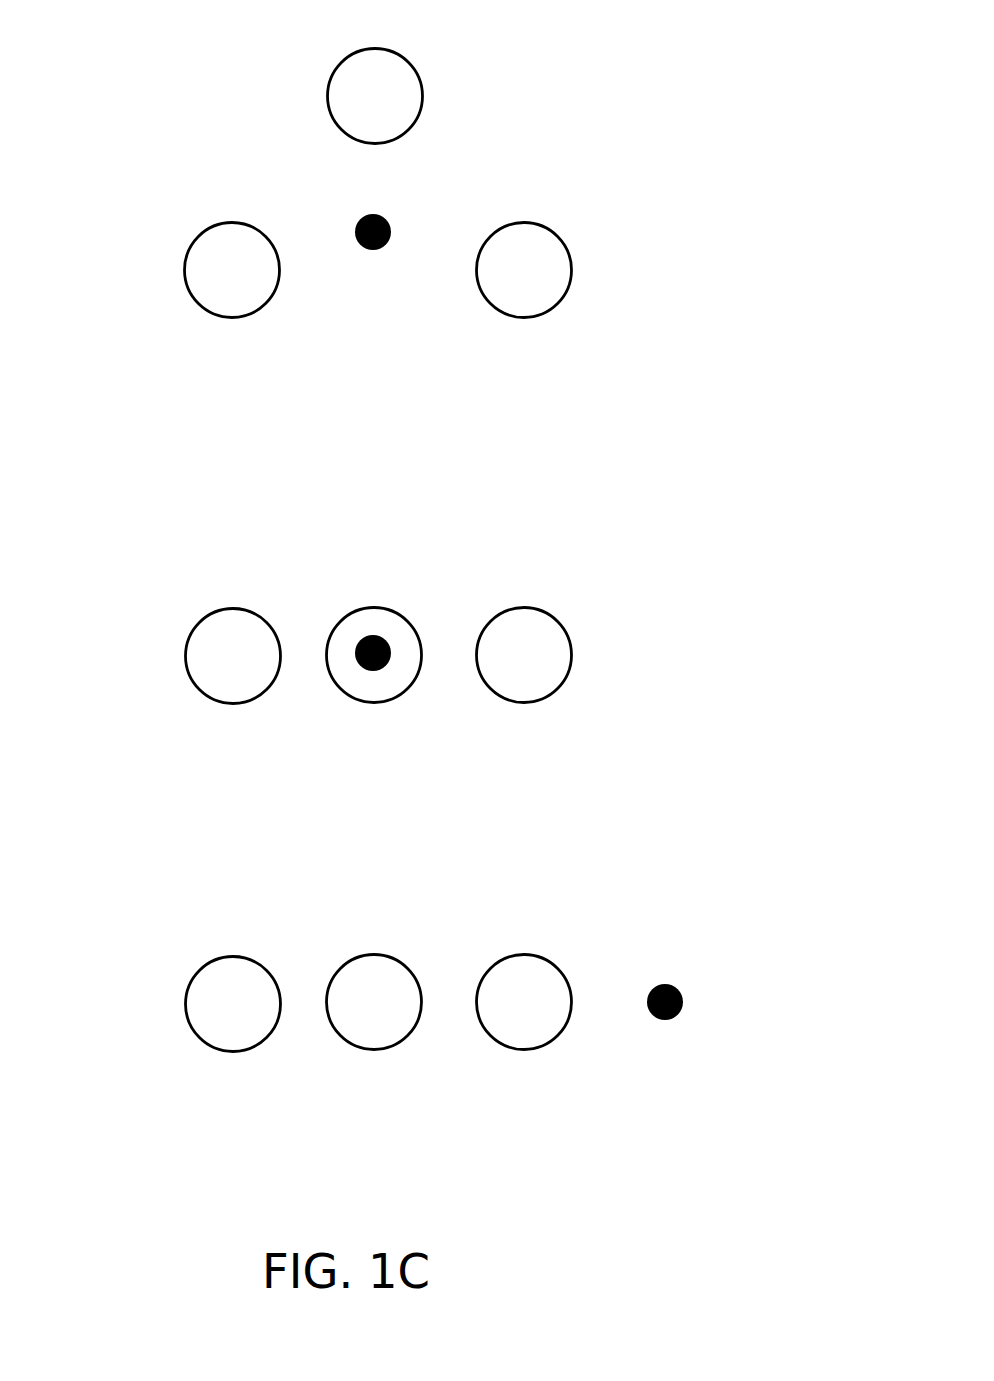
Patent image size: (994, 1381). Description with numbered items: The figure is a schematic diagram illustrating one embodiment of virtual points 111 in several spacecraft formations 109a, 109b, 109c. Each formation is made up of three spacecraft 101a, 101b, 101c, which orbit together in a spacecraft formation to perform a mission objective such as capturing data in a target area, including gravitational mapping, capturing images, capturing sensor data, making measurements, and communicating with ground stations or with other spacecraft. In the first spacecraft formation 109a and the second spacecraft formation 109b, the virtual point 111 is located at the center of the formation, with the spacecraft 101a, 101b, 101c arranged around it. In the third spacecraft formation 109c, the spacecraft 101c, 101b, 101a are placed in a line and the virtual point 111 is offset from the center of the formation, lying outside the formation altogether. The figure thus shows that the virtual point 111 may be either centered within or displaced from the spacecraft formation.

The spacecraft 101a is at (524, 636).
The spacecraft 101b is at (375, 549).
The spacecraft 101c is at (233, 637).
The spacecraft formation 109a is at (78, 55).
The spacecraft formation 109b is at (86, 565).
The spacecraft formation 109c is at (86, 932).
The virtual point 111 is at (389, 244).